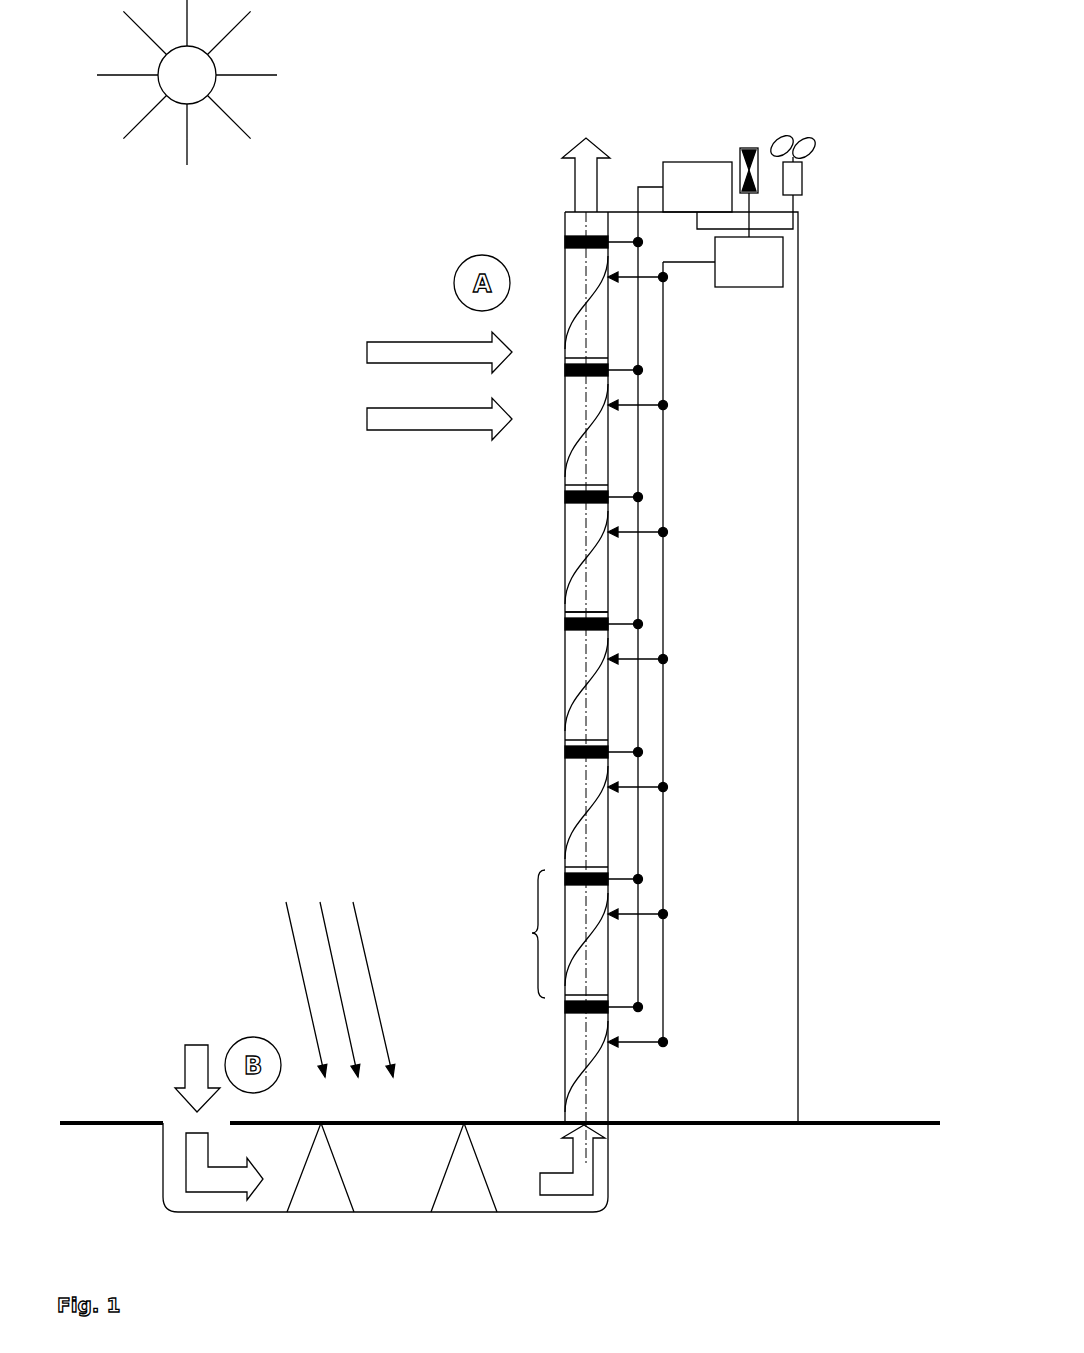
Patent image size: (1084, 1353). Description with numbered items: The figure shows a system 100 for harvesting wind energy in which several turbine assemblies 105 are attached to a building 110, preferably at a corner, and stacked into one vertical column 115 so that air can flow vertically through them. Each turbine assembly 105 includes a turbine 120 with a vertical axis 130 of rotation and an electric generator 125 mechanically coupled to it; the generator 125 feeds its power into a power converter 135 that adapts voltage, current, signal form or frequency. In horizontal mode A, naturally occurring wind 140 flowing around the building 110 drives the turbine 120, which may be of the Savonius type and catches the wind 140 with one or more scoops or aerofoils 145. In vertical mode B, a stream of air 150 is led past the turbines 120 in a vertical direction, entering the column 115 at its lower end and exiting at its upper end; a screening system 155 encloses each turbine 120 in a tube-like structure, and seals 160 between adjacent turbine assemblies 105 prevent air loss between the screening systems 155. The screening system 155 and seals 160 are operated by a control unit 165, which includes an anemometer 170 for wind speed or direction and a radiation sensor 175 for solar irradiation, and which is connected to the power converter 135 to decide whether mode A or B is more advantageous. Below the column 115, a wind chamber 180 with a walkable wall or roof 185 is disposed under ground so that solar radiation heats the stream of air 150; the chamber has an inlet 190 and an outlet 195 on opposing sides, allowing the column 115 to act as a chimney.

The system for harvesting wind energy 100 is at (425, 186).
The turbine assembly 105 is at (511, 934).
The building 110 is at (798, 470).
The column 115 is at (594, 120).
The turbine 120 is at (565, 722).
The electric generator 125 is at (565, 753).
The vertical axis 130 is at (578, 224).
The power converter 135 is at (697, 162).
The wind 140 is at (385, 422).
The scoop or aerofoil 145 is at (565, 823).
The stream of air 150 is at (578, 178).
The screening system 155 is at (620, 552).
The seal 160 is at (546, 618).
The control unit 165 is at (785, 258).
The anemometer 170 is at (793, 137).
The radiation sensor 175 is at (748, 148).
The wind chamber 180 is at (509, 1145).
The wall or roof 185 is at (442, 1120).
The inlet 190 is at (163, 1108).
The outlet 195 is at (600, 1128).